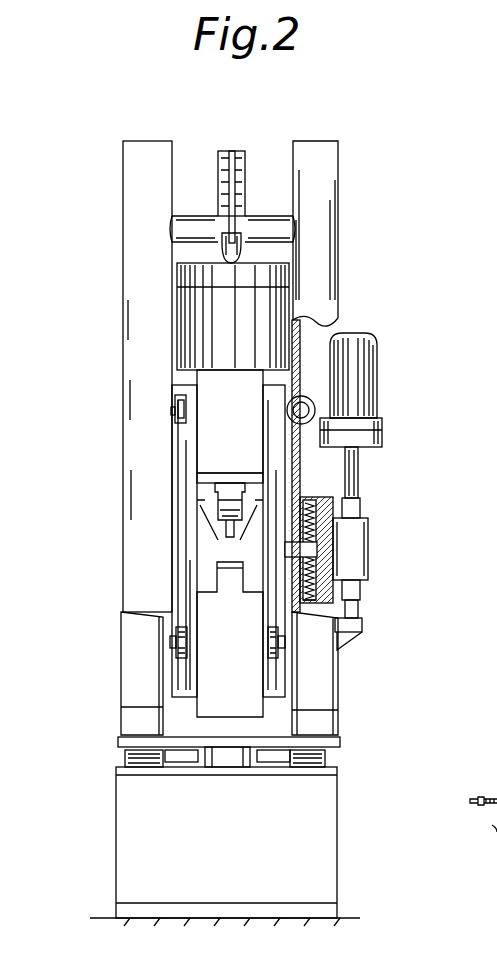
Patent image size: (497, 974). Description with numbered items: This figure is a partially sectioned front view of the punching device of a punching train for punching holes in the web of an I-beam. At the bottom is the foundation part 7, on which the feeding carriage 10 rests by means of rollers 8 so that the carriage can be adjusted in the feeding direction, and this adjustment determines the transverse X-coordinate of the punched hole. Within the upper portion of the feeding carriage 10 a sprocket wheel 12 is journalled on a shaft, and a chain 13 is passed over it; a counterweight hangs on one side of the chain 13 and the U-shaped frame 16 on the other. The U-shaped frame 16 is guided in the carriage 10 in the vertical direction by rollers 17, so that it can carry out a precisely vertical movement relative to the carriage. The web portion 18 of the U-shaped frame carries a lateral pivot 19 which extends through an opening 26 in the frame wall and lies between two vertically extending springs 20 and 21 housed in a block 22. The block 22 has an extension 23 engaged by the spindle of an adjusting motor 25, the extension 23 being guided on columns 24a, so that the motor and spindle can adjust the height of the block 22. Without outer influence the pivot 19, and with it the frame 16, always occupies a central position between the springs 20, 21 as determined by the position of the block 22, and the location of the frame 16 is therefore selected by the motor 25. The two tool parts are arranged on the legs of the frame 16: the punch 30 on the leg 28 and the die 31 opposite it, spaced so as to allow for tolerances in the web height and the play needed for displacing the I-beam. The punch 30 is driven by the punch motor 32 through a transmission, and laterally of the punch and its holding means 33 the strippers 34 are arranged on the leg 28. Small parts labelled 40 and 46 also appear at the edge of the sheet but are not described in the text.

The foundation part 7 is at (118, 812).
The rollers 8 is at (125, 741).
The feeding carriage 10 is at (140, 200).
The sprocket wheel 12 is at (222, 185).
The chain 13 is at (245, 185).
The U-shaped frame 16 is at (174, 541).
The rollers 17 is at (175, 413).
The web portion 18 is at (183, 525).
The lateral pivot 19 is at (297, 550).
The spring 20 is at (390, 472).
The spring 21 is at (315, 603).
The block 22 is at (333, 512).
The extension 23 is at (370, 545).
The columns 24a is at (362, 612).
The adjusting motor 25 is at (377, 345).
The opening 26 is at (292, 520).
The leg 28 is at (215, 380).
The punch 30 is at (215, 540).
The die 31 is at (213, 600).
The punch motor 32 is at (205, 322).
The holding means 33 is at (215, 498).
The strippers 34 is at (225, 548).
The bolt 40 is at (491, 795).
The nut 46 is at (488, 852).